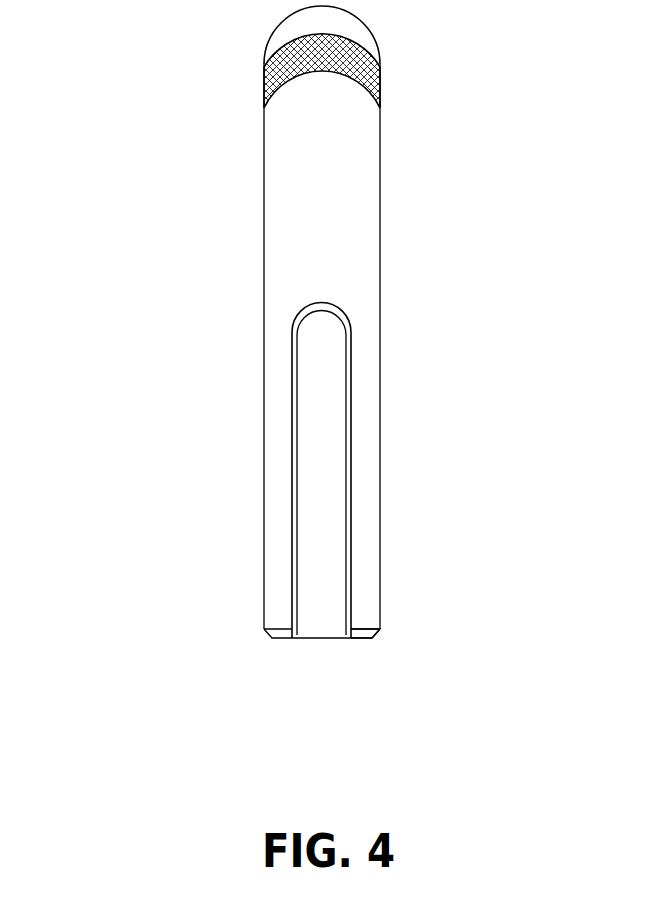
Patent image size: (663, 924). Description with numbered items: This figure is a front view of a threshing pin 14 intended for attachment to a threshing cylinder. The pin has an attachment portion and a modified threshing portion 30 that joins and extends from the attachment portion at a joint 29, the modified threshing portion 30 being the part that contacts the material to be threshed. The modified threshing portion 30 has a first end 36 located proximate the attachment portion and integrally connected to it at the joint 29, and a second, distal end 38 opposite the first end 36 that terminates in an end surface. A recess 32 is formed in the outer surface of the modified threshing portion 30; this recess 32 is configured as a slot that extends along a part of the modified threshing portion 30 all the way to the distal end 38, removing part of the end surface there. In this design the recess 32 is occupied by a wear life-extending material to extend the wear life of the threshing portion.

The threshing pin 14 is at (150, 187).
The joint 29 is at (338, 190).
The modified threshing portion 30 is at (235, 494).
The first end 36 is at (330, 285).
The recess 32 is at (327, 433).
The distal end 38 is at (358, 639).